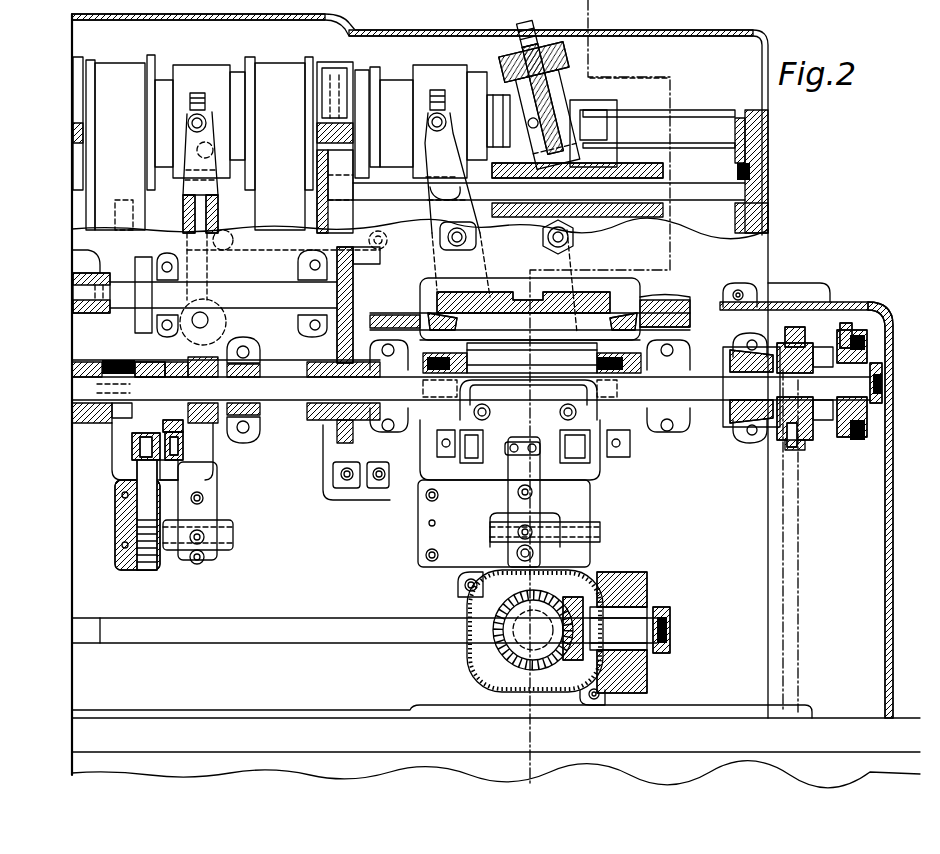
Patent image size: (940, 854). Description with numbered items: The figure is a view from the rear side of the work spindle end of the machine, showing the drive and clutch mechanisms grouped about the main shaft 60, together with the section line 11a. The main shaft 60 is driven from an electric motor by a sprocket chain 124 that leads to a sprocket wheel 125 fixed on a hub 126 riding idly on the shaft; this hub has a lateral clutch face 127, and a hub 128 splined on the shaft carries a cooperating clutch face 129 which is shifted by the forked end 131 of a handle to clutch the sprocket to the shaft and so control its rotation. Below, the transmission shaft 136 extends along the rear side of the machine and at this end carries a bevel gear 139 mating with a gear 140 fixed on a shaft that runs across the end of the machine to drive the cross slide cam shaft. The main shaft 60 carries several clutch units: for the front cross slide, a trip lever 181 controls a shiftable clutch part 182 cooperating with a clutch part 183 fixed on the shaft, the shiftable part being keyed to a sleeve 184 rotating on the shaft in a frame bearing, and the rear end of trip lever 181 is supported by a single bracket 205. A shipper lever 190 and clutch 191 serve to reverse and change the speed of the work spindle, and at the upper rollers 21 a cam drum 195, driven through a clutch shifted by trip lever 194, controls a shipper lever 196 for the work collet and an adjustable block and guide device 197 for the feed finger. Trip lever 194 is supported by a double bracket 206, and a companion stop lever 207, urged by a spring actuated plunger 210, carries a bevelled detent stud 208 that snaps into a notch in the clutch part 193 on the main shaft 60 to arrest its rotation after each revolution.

The roller 21 is at (84, 58).
The clutch 191 is at (206, 72).
The shipper lever 190 is at (183, 226).
The shipper lever 196 is at (428, 152).
The adjustable block and guide device 197 is at (518, 46).
The section line 11a is at (596, 9).
The cam drum 195 is at (500, 282).
The clutch part 183 is at (212, 353).
The sleeve 184 is at (111, 360).
The clutch part 182 is at (146, 362).
The main shaft 60 is at (290, 378).
The clutch part 193 is at (528, 400).
The trip lever 181 is at (131, 447).
The detent stud 208 is at (181, 426).
The companion lever 207 is at (183, 448).
The spring actuated plunger 210 is at (170, 478).
The bracket 205 is at (208, 496).
The trip lever 194 is at (583, 446).
The double bracket 206 is at (535, 509).
The gear 140 is at (510, 660).
The bevel gear 139 is at (557, 602).
The transmission shaft 136 is at (329, 620).
The sprocket wheel 125 is at (788, 450).
The sprocket chain 124 is at (798, 542).
The hub 126 is at (812, 430).
The clutch face 127 is at (820, 430).
The hub 128 is at (868, 440).
The clutch face 129 is at (822, 350).
The forked end 131 is at (848, 330).